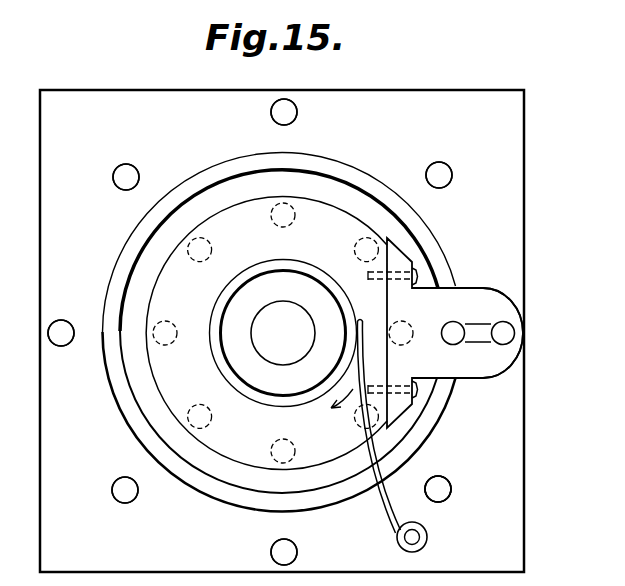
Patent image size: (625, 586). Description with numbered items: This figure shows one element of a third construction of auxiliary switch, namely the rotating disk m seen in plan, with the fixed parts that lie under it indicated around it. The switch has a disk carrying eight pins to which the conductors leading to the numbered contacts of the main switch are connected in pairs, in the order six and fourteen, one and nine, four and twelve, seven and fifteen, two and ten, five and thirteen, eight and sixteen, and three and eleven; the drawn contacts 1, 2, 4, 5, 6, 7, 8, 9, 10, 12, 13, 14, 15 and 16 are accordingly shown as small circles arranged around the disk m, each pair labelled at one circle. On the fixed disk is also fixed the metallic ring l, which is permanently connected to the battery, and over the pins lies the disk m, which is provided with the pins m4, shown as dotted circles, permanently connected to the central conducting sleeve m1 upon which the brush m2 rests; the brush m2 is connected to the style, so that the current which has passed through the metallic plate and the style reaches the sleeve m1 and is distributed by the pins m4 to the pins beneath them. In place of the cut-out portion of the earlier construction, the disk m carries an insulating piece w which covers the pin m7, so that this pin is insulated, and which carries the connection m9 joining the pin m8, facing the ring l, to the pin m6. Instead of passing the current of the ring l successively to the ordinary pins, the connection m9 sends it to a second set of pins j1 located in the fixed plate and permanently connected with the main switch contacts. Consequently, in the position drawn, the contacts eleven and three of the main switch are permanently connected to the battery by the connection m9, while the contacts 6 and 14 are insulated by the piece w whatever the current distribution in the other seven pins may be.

The contact of the main switch 1 is at (271, 555).
The contact of the main switch 2 is at (115, 182).
The contact of the main switch 4 is at (114, 483).
The contact of the main switch 5 is at (271, 113).
The contact of the main switch 6 is at (426, 492).
The contact of the main switch 7 is at (62, 346).
The contact of the main switch 8 is at (453, 175).
The contact of the main switch 9 is at (297, 552).
The contact of the main switch 10 is at (137, 168).
The contact of the main switch 12 is at (126, 503).
The contact of the main switch 13 is at (297, 113).
The contact of the main switch 14 is at (450, 494).
The contact of the main switch 15 is at (66, 320).
The contact of the main switch 16 is at (426, 175).
The second set of pins j1 is at (451, 486).
The metallic ring l is at (262, 506).
The disk m is at (228, 448).
The conducting sleeve m1 is at (218, 347).
The brush m2 is at (375, 456).
The metallic pins m4 is at (287, 445).
The pin m6 is at (515, 332).
The pin m7 is at (467, 333).
The pin m8 is at (457, 336).
The connection m9 is at (479, 330).
The insulating piece w is at (395, 300).